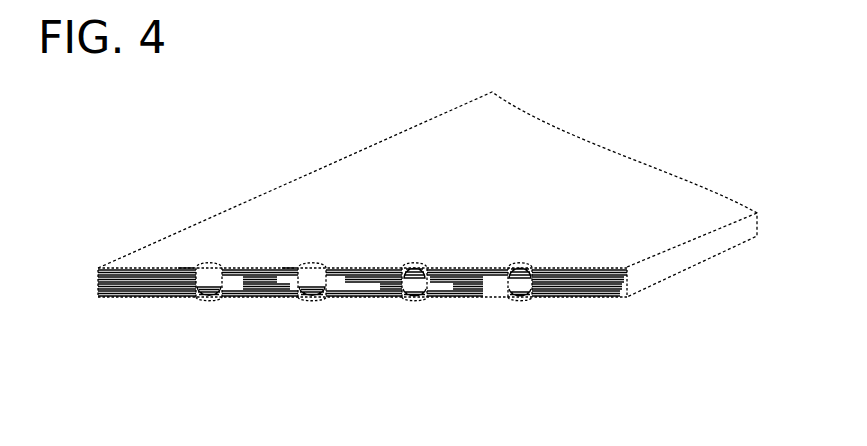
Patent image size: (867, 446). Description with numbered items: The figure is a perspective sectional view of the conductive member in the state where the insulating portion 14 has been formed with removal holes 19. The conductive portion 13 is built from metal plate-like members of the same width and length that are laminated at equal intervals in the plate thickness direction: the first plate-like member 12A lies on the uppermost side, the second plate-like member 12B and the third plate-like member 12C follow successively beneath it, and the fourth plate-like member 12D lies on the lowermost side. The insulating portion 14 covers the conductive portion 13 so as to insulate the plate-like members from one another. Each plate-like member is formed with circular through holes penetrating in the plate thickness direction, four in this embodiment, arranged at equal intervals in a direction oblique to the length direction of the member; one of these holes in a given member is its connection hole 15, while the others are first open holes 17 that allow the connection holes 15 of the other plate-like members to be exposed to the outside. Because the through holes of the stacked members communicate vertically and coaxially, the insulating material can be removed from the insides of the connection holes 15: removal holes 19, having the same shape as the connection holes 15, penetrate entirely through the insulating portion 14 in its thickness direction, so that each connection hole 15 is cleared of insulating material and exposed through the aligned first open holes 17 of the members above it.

The first plate-like member 12A is at (632, 268).
The second plate-like member 12B is at (610, 276).
The third plate-like member 12C is at (603, 281).
The fourth plate-like member 12D is at (587, 294).
The conductive portion 13 is at (730, 332).
The insulating portion 14 is at (625, 167).
The connection hole 15 is at (516, 262).
The first open hole 17 is at (283, 275).
The removal hole 19 is at (310, 266).